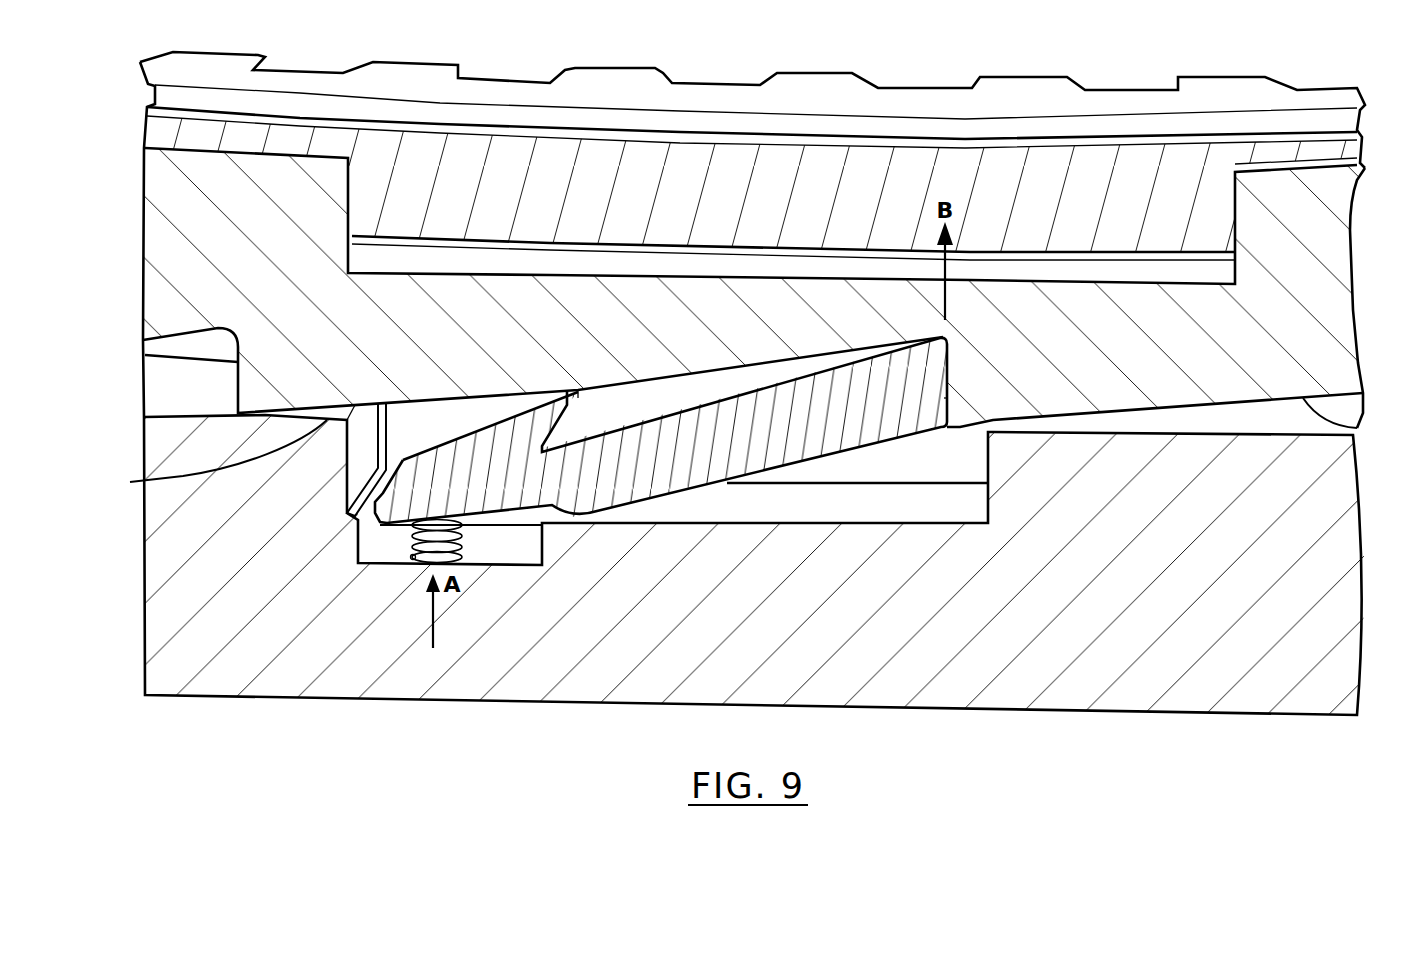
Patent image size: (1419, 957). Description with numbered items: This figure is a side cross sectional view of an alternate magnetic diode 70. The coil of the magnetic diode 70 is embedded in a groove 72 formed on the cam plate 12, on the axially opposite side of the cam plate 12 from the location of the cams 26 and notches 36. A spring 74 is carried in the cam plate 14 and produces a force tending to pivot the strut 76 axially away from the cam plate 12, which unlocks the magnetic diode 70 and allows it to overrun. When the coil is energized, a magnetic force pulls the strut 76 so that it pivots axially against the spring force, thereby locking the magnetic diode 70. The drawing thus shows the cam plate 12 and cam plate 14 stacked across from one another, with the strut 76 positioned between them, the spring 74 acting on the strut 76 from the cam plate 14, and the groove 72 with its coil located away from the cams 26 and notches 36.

The cam plate 12 is at (393, 352).
The cam plate 14 is at (924, 627).
The cam 26 is at (1380, 427).
The notch 36 is at (947, 398).
The magnetic diode 70 is at (117, 361).
The groove 72 is at (350, 192).
The spring 74 is at (410, 545).
The strut 76 is at (756, 443).